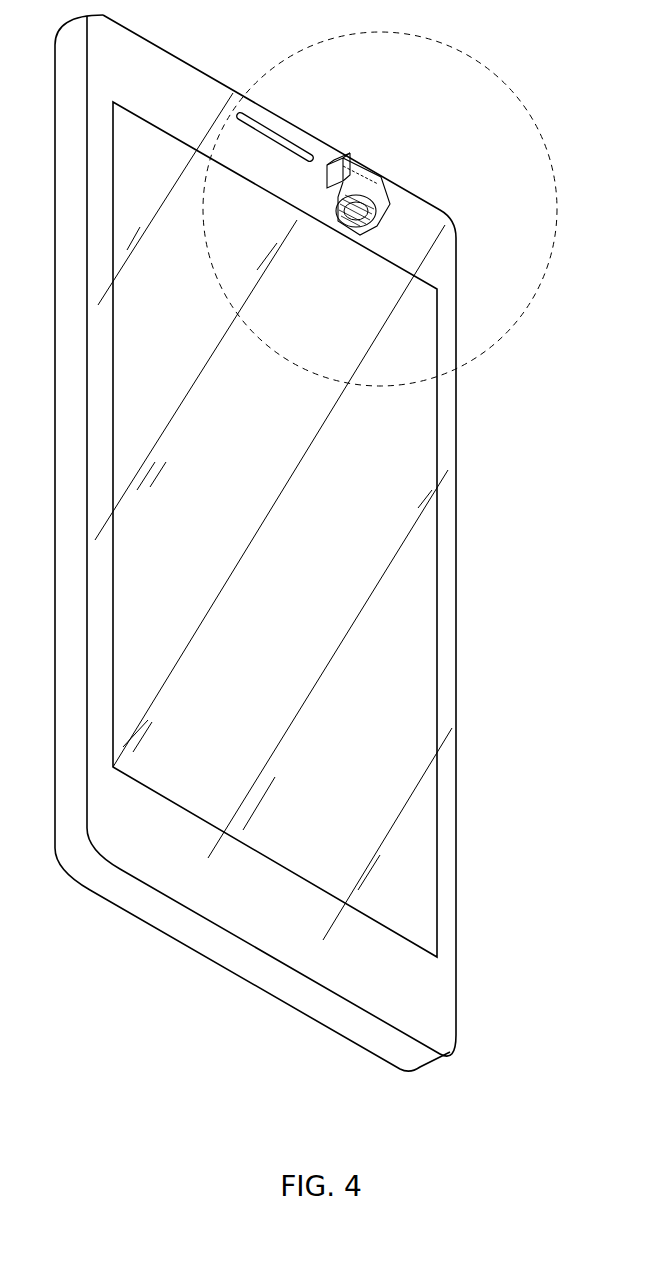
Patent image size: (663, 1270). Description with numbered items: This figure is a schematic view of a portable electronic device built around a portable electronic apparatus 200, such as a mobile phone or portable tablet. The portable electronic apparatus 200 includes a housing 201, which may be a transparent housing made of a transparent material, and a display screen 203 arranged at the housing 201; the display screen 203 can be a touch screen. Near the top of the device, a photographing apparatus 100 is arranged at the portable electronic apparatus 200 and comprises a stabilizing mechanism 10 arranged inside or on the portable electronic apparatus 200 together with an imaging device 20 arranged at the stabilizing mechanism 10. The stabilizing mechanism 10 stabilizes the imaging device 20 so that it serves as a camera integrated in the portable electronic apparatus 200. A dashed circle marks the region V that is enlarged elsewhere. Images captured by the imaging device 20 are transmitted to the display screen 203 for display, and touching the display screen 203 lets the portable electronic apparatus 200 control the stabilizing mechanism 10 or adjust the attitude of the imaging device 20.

The region V is at (507, 84).
The photographing apparatus 100 is at (468, 221).
The stabilizing mechanism 10 is at (388, 203).
The imaging device 20 is at (345, 245).
The portable electronic apparatus 200 is at (332, 543).
The housing 201 is at (448, 555).
The display screen 203 is at (400, 410).